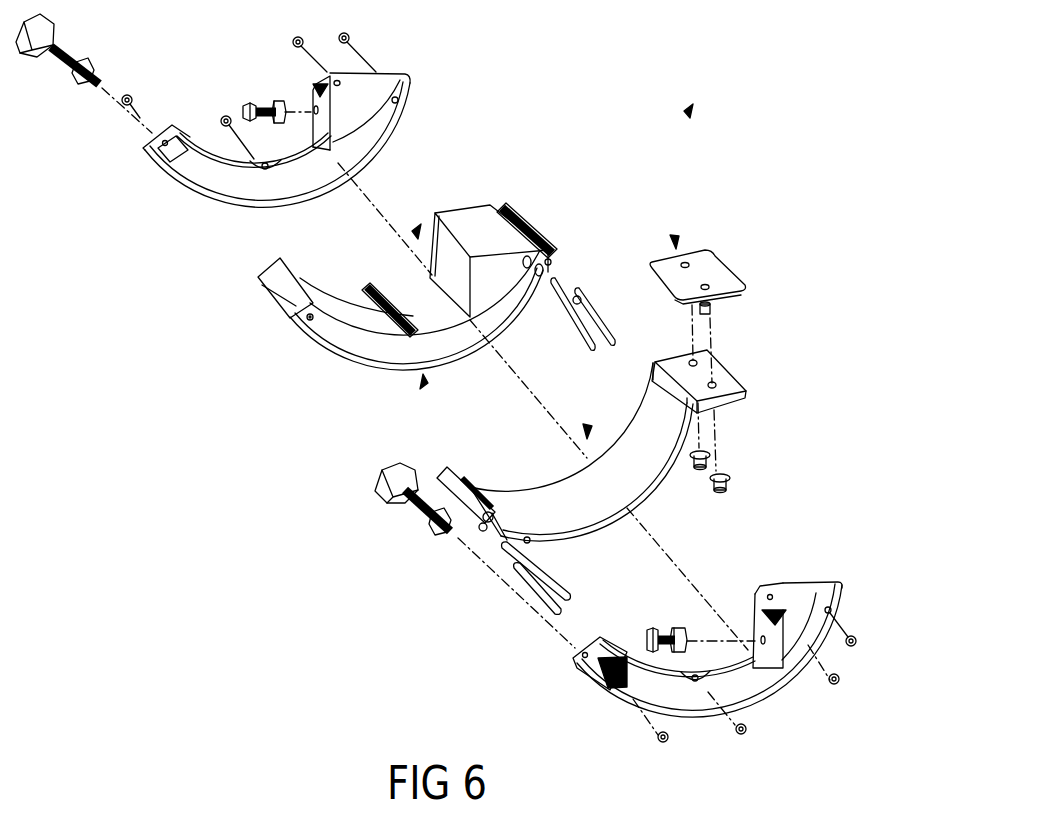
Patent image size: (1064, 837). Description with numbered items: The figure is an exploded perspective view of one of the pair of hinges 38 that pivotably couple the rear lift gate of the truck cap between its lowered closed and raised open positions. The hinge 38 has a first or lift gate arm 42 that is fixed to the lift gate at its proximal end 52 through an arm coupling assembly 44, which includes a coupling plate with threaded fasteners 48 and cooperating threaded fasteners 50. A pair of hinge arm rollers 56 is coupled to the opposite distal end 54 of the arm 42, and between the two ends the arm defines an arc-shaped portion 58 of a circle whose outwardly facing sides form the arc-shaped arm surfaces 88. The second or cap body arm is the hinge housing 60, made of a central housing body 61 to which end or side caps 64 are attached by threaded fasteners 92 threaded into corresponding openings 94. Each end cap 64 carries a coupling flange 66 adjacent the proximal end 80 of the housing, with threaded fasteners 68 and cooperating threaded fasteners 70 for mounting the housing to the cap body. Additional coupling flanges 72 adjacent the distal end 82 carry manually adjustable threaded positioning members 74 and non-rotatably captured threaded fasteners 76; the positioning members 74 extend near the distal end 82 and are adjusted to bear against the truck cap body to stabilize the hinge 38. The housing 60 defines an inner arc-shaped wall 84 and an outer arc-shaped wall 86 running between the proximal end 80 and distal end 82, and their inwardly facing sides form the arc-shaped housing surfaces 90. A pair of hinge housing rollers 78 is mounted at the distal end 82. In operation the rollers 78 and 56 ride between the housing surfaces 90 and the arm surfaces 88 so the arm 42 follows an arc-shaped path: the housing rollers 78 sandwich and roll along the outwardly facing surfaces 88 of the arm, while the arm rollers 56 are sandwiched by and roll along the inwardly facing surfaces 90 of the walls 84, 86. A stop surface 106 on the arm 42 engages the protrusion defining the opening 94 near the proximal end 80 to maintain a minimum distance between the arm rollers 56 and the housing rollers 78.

The hinge 38 is at (689, 116).
The lift gate arm 42 is at (585, 425).
The arm coupling assembly 44 is at (675, 241).
The threaded fasteners 48 is at (713, 307).
The cooperating threaded fasteners 50 is at (733, 482).
The proximal end 52 is at (725, 376).
The distal end 54 is at (449, 468).
The hinge arm rollers 56 is at (550, 600).
The arc-shaped portion 58 is at (585, 531).
The hinge housing 60 is at (417, 235).
The central housing body 61 is at (423, 380).
The end caps 64 is at (192, 172).
The coupling flange 66 is at (309, 94).
The threaded fasteners 68 is at (246, 104).
The cooperating threaded fasteners 70 is at (275, 101).
The additional coupling flanges 72 is at (600, 668).
The manually adjustable threaded positioning members 74 is at (55, 29).
The non-rotatably captured threaded fasteners 76 is at (93, 72).
The hinge housing rollers 78 is at (585, 306).
The proximal end 80 is at (535, 222).
The distal end 82 is at (281, 277).
The inner arc-shaped wall 84 is at (355, 328).
The outer arc-shaped wall 86 is at (346, 358).
The arc-shaped arm surfaces 88 is at (616, 500).
The arc-shaped housing surfaces 90 is at (412, 366).
The threaded fasteners 92 is at (349, 37).
The openings 94 is at (374, 286).
The stop surface 106 is at (527, 538).